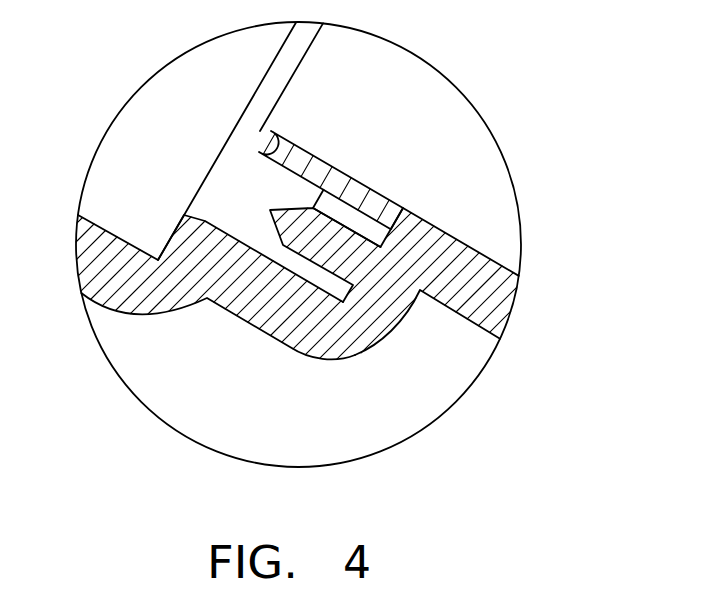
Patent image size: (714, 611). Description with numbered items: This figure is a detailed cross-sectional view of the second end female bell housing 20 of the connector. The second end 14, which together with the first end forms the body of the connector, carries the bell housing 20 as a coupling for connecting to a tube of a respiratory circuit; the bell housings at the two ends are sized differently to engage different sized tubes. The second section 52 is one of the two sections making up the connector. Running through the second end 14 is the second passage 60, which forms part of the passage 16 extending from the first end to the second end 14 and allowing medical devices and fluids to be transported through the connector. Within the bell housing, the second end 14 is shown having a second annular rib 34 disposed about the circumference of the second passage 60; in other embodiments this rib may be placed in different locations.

The second passage 60 is at (443, 120).
The passage 16 is at (477, 195).
The second end 14 is at (498, 281).
The second section 52 is at (470, 290).
The second annular rib 34 is at (337, 252).
The second end female bell housing 20 is at (203, 282).